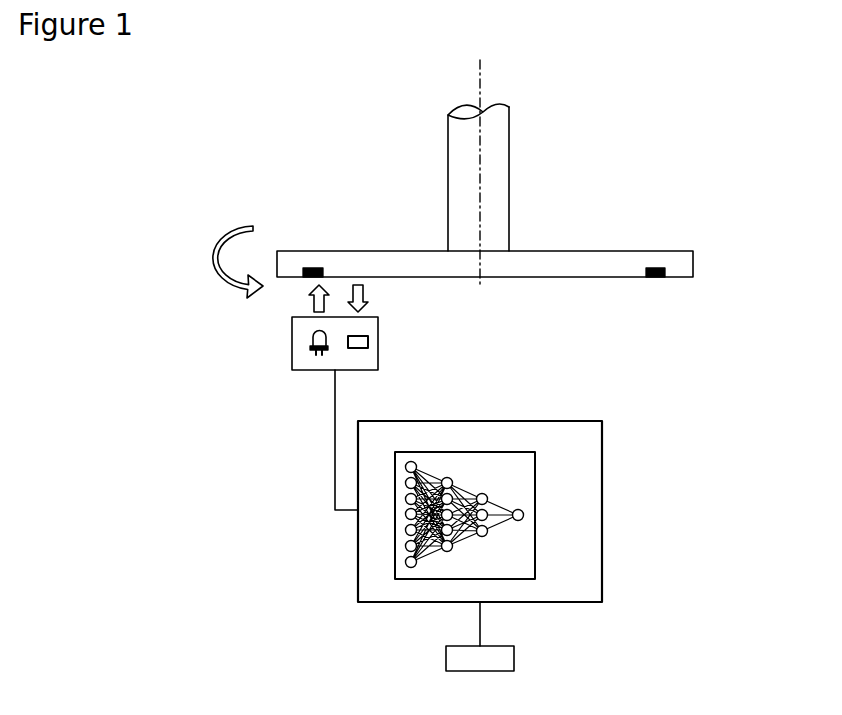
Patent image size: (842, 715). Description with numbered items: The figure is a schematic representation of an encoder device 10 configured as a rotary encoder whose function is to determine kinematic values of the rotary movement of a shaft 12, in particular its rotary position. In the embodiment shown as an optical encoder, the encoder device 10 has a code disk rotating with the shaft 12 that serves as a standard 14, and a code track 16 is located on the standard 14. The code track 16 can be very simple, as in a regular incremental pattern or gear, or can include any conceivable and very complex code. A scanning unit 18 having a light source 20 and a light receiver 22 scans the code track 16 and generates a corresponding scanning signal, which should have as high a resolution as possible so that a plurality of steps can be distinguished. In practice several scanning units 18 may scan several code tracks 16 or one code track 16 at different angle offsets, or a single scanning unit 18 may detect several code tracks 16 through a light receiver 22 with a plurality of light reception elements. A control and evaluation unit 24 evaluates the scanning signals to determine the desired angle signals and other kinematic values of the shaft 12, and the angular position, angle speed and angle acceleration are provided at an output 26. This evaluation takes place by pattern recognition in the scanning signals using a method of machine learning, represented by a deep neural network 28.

The encoder device 10 is at (761, 81).
The shaft 12 is at (536, 177).
The standard 14 is at (527, 245).
The code track 16 is at (496, 245).
The scanning unit 18 is at (373, 343).
The light source 20 is at (289, 376).
The light receiver 22 is at (377, 372).
The control and evaluation unit 24 is at (535, 506).
The output 26 is at (522, 655).
The deep neural network 28 is at (546, 515).